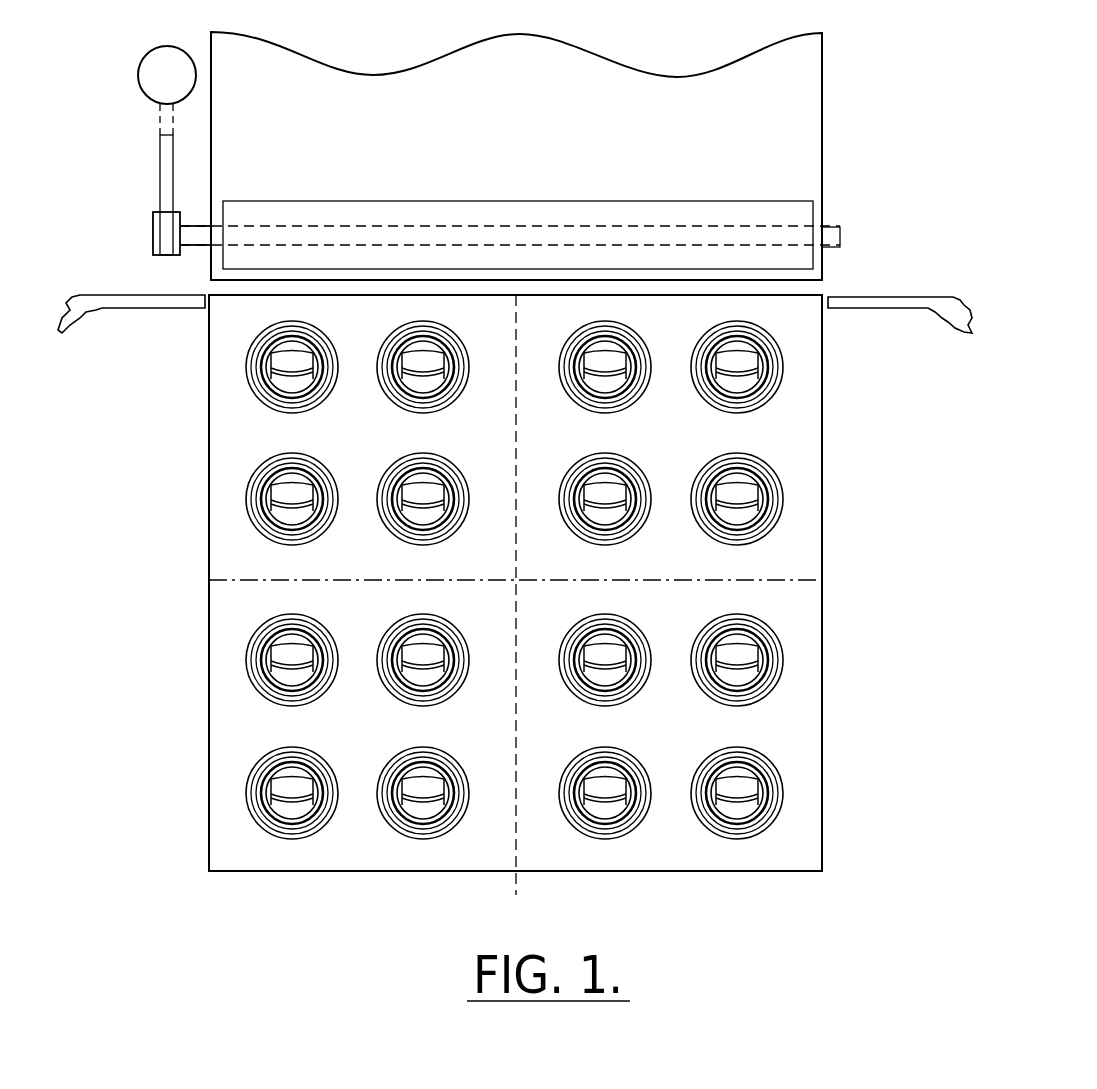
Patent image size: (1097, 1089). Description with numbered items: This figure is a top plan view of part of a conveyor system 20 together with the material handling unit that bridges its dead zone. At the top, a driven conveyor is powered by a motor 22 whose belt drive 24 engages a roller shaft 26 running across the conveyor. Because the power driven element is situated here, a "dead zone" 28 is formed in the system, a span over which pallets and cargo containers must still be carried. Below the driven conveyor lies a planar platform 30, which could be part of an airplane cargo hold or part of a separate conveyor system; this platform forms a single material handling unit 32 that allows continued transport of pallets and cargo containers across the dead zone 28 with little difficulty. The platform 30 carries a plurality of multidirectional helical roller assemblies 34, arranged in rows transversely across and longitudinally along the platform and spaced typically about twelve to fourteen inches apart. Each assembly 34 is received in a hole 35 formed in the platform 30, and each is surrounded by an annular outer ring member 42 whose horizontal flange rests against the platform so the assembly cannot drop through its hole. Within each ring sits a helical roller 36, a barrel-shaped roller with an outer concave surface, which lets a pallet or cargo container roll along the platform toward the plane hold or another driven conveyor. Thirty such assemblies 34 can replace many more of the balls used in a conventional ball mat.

The conveyor system 20 is at (894, 212).
The motor 22 is at (150, 52).
The belt drive 24 is at (160, 173).
The roller shaft 26 is at (197, 247).
The dead zone 28 is at (893, 473).
The platform 30 is at (196, 486).
The material handling unit 32 is at (870, 564).
The multidirectional helical roller assembly 34 is at (238, 374).
The hole 35 is at (775, 768).
The helical roller 36 is at (617, 374).
The outer ring member 42 is at (257, 340).